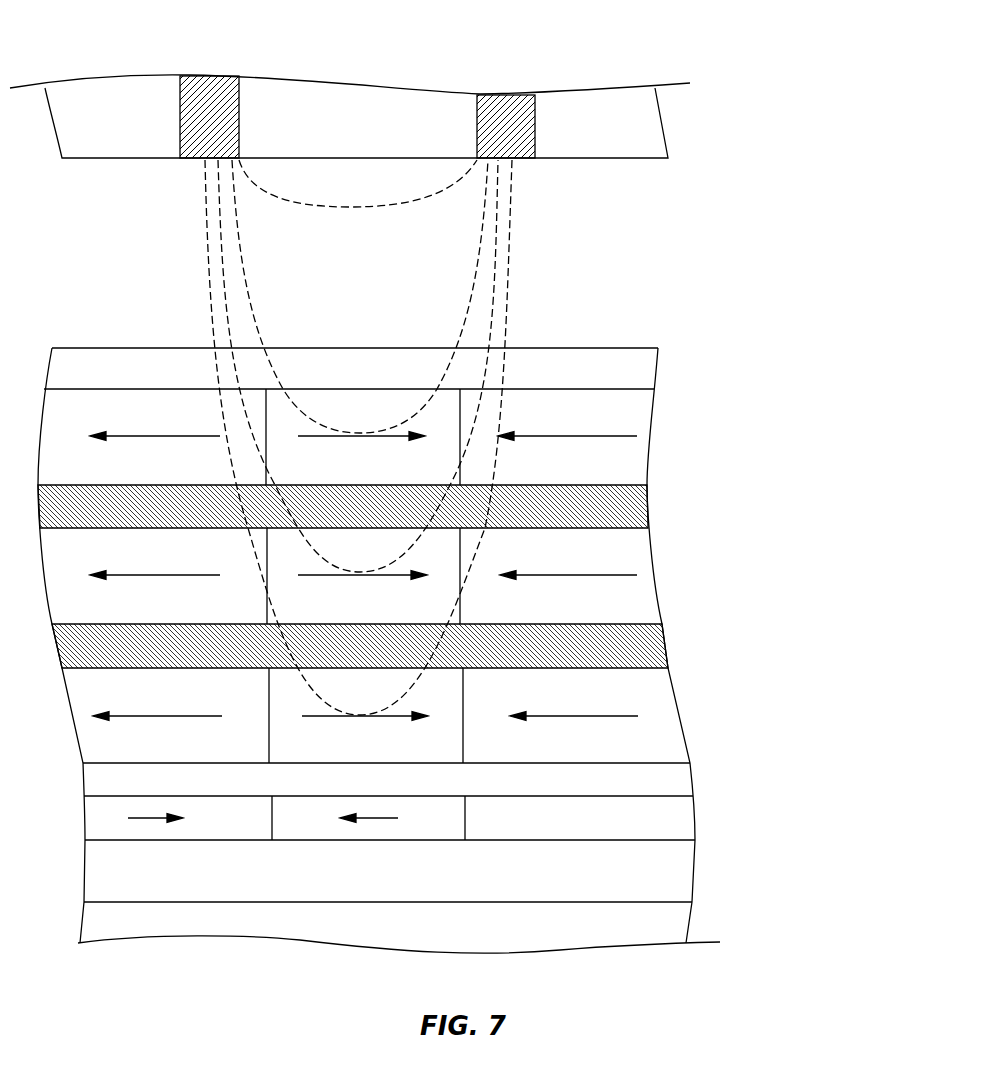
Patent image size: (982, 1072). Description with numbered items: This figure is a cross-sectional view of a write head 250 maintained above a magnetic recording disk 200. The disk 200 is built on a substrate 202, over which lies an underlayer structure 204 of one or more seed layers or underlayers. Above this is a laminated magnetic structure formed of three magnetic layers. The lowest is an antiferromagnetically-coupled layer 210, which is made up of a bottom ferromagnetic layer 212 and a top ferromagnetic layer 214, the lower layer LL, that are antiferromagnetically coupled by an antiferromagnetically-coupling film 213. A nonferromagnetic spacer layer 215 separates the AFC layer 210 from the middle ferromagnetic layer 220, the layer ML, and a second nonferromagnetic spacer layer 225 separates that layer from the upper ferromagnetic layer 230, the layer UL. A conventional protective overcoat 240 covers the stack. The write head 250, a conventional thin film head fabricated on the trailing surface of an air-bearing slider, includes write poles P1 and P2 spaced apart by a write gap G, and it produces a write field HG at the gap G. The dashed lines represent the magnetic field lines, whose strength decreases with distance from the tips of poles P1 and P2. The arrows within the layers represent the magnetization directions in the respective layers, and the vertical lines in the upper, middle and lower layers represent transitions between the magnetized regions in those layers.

The write head 250 is at (113, 88).
The write pole P2 is at (223, 75).
The write pole P1 is at (527, 95).
The write gap G is at (373, 90).
The write field HG is at (363, 205).
The magnetic recording disk 200 is at (158, 306).
The protective overcoat 240 is at (643, 365).
The upper ferromagnetic layer 230 is at (642, 446).
The nonferromagnetic spacer layer 225 is at (642, 511).
The middle ferromagnetic layer 220 is at (642, 592).
The nonferromagnetic spacer layer 215 is at (417, 645).
The top ferromagnetic layer 214 is at (640, 727).
The antiferromagnetically-coupling film 213 is at (660, 783).
The bottom ferromagnetic layer 212 is at (433, 816).
The antiferromagnetically-coupled layer 210 is at (503, 751).
The underlayer structure 204 is at (663, 872).
The substrate 202 is at (663, 910).